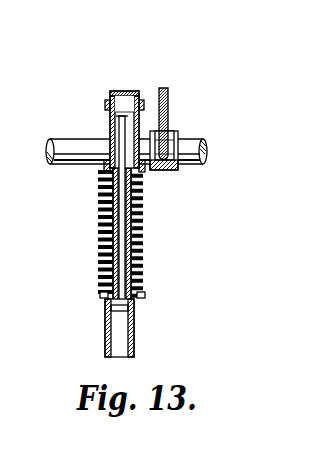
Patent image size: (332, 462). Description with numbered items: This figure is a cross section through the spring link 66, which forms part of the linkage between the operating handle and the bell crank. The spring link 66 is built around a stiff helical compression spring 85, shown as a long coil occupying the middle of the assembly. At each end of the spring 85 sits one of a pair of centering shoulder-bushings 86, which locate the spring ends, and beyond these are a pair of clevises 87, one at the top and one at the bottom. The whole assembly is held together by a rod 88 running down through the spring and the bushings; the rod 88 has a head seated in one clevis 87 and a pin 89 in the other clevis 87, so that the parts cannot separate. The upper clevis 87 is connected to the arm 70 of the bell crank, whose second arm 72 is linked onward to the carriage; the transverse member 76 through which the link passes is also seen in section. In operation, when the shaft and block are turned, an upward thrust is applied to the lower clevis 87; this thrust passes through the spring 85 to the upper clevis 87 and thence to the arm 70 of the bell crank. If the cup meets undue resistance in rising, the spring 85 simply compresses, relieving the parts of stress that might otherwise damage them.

The spring link 66 is at (121, 212).
The arm of the bell crank 70 is at (126, 91).
The second arm of the bell crank 72 is at (168, 99).
The cross tube 76 is at (64, 166).
The helical compression spring 85 is at (99, 243).
The centering shoulder-bushings 86 is at (99, 192).
The clevises 87 is at (105, 105).
The rod 88 is at (143, 210).
The pin 89 is at (118, 132).